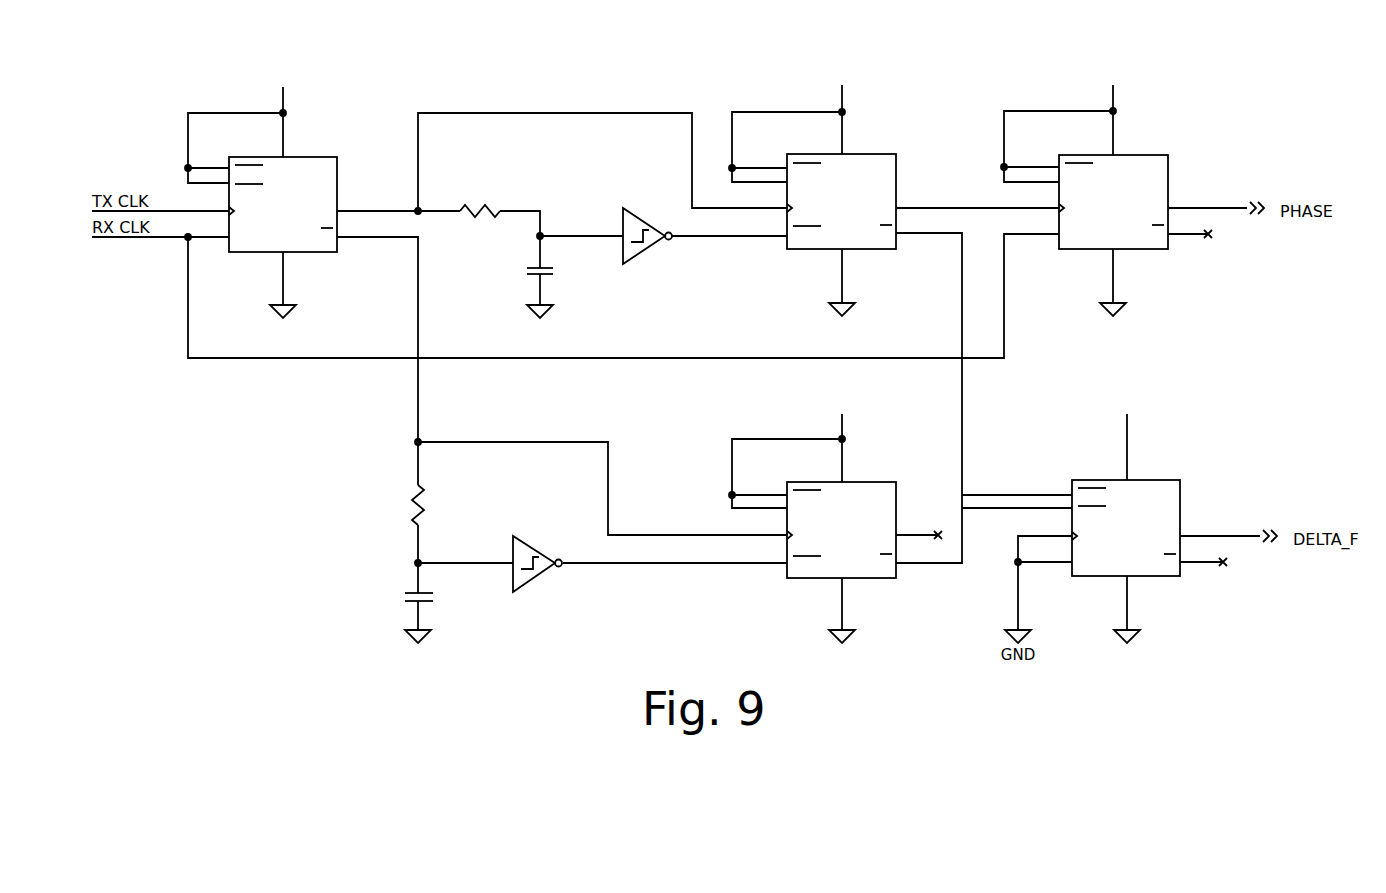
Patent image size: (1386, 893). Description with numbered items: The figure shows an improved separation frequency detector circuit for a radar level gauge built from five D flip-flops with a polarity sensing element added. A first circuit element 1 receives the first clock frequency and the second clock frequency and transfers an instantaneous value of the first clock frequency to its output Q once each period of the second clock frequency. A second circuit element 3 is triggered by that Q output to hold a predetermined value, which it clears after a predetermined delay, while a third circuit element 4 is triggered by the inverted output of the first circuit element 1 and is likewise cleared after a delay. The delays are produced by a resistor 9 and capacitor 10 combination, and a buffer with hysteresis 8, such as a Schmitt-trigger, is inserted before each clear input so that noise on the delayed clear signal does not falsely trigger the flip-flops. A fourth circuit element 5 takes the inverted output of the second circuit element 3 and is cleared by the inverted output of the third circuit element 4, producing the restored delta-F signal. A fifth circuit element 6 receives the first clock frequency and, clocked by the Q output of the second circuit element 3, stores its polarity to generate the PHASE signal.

The first circuit element 1 is at (316, 128).
The second circuit element 3 is at (866, 135).
The third circuit element 4 is at (862, 462).
The fourth circuit element 5 is at (1156, 462).
The fifth circuit element 6 is at (1146, 138).
The buffer with hysteresis 8 is at (633, 245).
The resistor 9 is at (488, 210).
The capacitor 10 is at (535, 270).